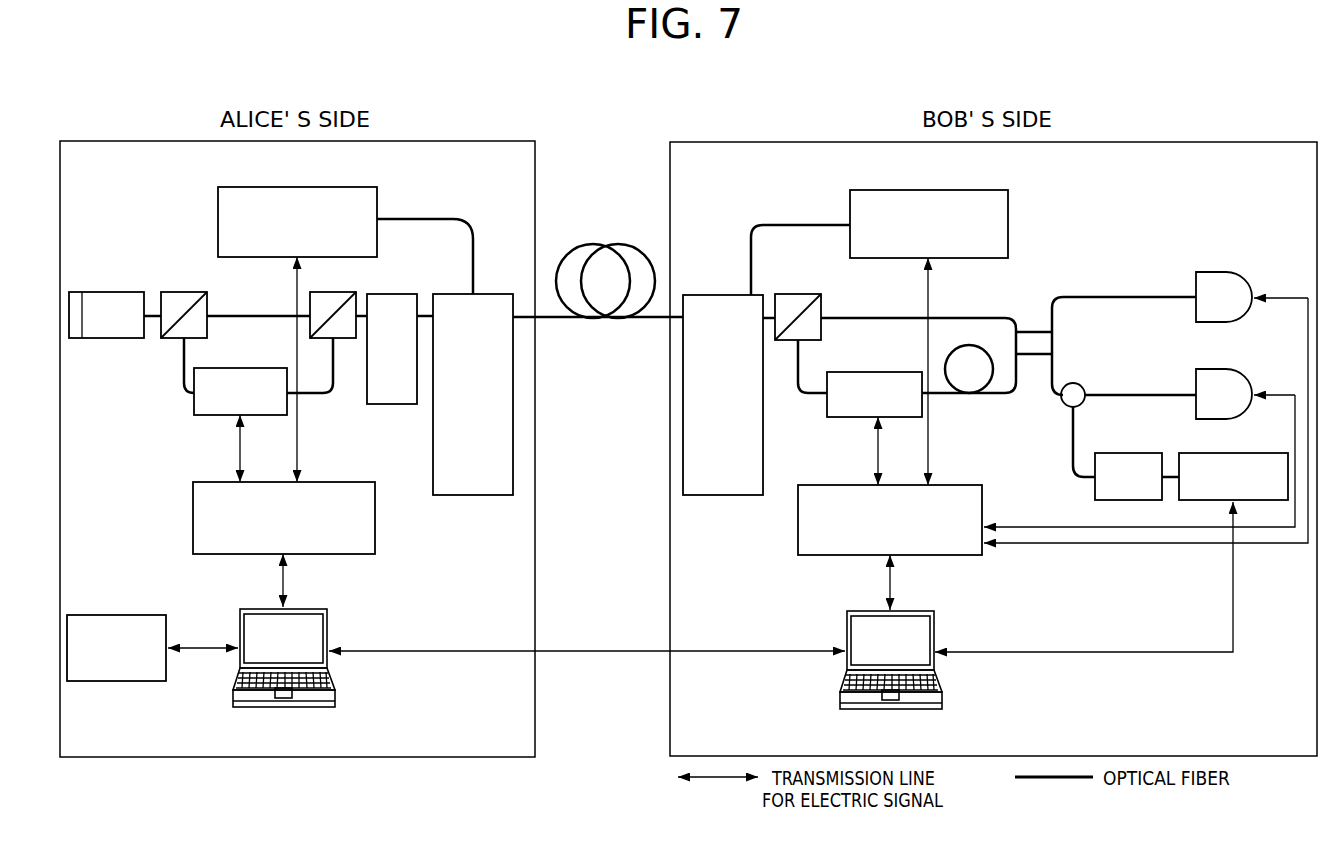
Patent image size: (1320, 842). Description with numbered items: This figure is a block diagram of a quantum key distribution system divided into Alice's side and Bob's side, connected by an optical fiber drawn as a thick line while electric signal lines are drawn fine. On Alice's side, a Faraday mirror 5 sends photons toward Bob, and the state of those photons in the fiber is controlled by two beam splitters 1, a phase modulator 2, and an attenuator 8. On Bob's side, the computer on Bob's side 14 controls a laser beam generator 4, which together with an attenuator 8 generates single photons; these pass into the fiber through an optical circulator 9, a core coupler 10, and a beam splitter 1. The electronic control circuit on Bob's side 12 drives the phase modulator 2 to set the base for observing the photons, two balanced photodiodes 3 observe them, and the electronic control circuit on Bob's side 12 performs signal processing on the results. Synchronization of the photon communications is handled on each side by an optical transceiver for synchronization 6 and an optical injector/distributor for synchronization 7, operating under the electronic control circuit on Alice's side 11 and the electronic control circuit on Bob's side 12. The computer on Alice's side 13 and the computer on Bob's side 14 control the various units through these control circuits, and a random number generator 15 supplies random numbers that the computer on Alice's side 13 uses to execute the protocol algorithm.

The beam splitter 1 is at (184, 292).
The phase modulator 2 is at (241, 368).
The balanced photodiode 3 is at (1236, 282).
The laser beam generator 4 is at (1265, 453).
The Faraday mirror 5 is at (100, 292).
The optical transceiver for synchronization 6 is at (314, 187).
The optical injector/distributor for synchronization 7 is at (471, 497).
The attenuator 8 is at (392, 408).
The optical circulator 9 is at (1084, 387).
The core coupler 10 is at (1030, 329).
The electronic control circuit on Alice's side 11 is at (193, 517).
The electronic control circuit on Bob's side 12 is at (824, 485).
The computer on Alice's side 13 is at (254, 609).
The computer on Bob's side 14 is at (862, 611).
The random number generator 15 is at (119, 615).